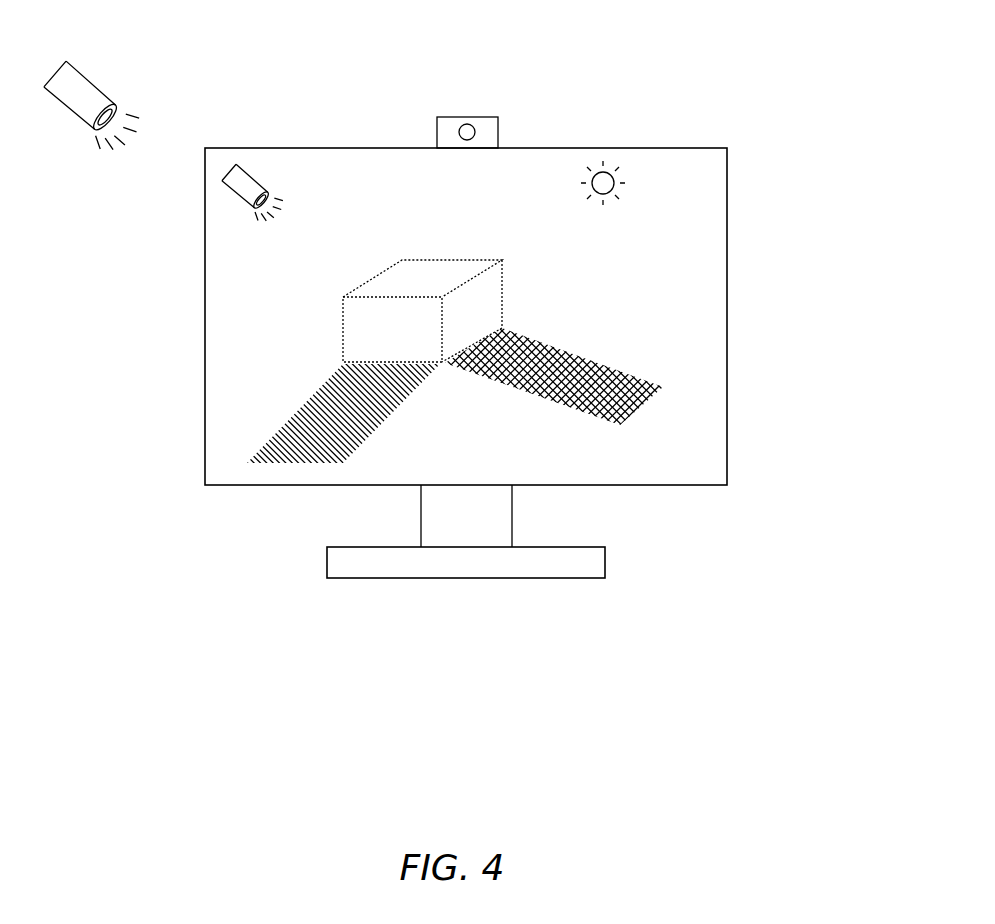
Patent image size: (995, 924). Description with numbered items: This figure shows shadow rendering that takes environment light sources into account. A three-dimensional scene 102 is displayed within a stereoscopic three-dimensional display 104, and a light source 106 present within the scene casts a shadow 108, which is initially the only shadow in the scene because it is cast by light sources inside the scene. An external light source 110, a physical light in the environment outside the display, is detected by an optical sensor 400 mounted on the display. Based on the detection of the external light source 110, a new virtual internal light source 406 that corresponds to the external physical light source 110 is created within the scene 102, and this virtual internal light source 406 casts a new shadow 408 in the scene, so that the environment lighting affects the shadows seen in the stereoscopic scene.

The 3D scene 102 is at (697, 302).
The stereoscopic 3D display 104 is at (695, 487).
The light source 106 is at (632, 170).
The shadow 108 is at (300, 411).
The external light source 110 is at (92, 82).
The optical sensor 400 is at (482, 117).
The virtual internal light source 406 is at (245, 172).
The shadow 408 is at (607, 377).